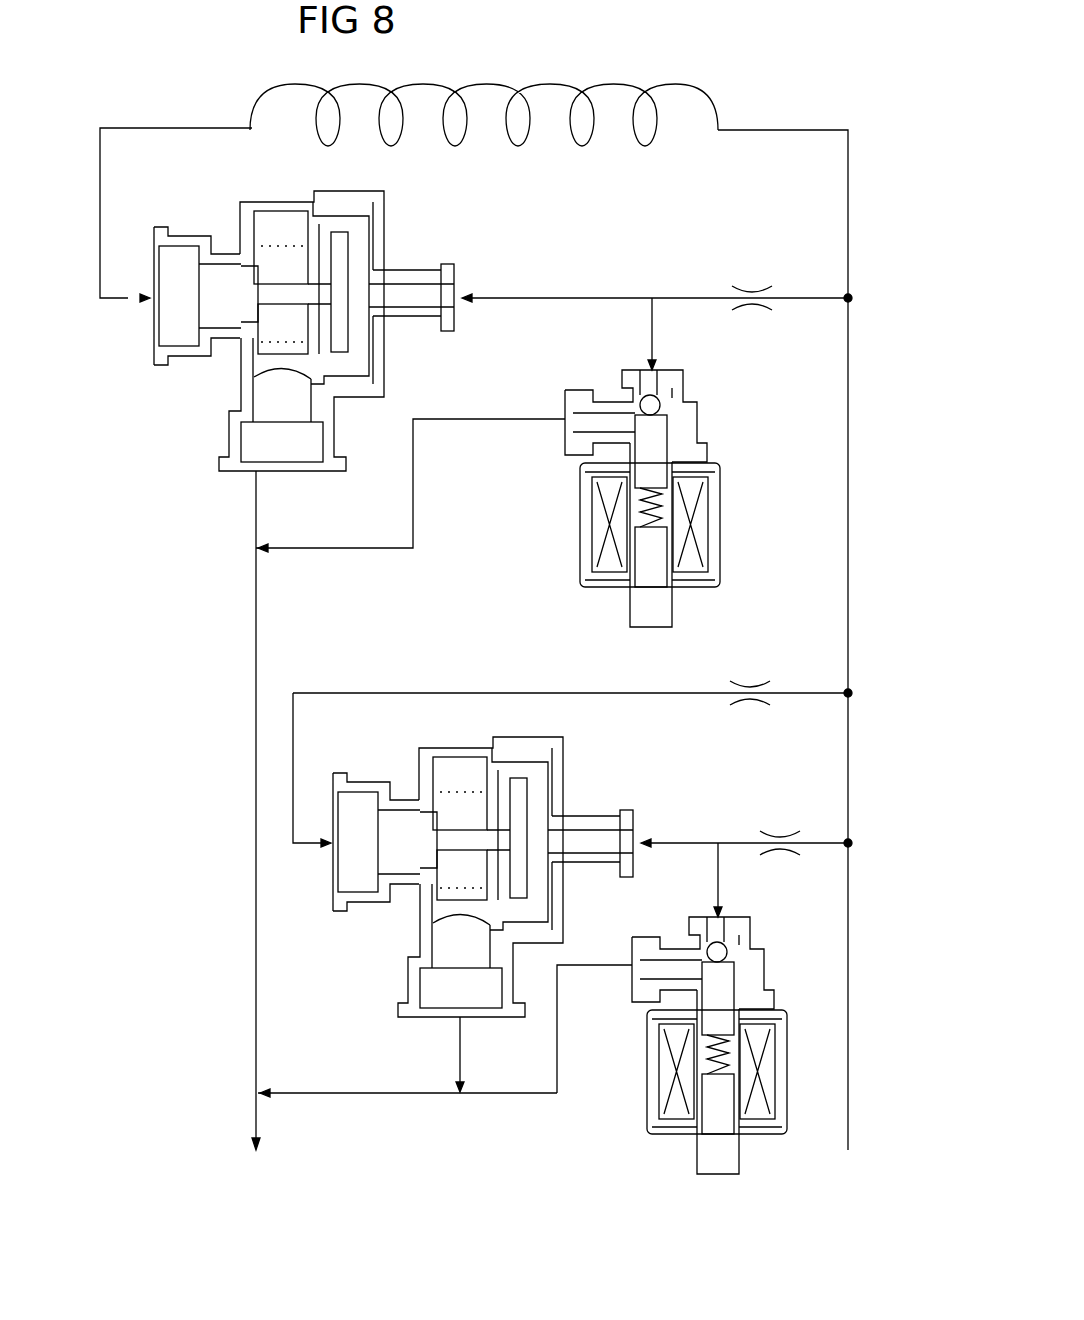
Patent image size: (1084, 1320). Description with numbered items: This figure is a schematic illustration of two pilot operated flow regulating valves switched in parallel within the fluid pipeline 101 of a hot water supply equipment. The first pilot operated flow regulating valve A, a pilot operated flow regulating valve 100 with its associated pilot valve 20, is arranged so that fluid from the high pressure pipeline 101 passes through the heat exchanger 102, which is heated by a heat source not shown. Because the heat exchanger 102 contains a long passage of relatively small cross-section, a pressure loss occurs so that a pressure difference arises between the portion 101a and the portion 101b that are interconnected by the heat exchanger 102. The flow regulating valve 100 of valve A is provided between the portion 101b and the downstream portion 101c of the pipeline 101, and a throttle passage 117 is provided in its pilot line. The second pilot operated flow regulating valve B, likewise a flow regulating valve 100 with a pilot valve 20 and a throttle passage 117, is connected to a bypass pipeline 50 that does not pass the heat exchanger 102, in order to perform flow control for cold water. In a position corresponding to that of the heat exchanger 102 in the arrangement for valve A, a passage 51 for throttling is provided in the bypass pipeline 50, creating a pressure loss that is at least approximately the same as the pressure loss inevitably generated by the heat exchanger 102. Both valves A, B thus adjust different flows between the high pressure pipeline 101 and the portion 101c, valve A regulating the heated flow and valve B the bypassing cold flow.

The pilot operated flow regulating valve 100 is at (412, 251).
The pilot valve 20 is at (718, 423).
The bypass pipeline 50 is at (472, 688).
The passage for throttling 51 is at (748, 679).
The fluid pipeline 101 is at (848, 1048).
The portion of fluid pipeline 101a is at (848, 218).
The portion of fluid pipeline 101b is at (104, 202).
The downstream portion of pipeline 101c is at (256, 1113).
The heat exchanger 102 is at (542, 133).
The throttle passage 117 is at (750, 283).
The pilot operated flow regulating valve A is at (186, 482).
The second pilot operated flow regulating valve B is at (203, 761).